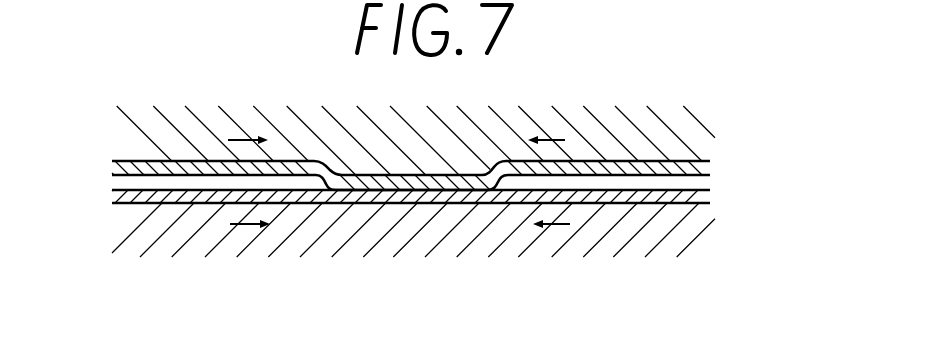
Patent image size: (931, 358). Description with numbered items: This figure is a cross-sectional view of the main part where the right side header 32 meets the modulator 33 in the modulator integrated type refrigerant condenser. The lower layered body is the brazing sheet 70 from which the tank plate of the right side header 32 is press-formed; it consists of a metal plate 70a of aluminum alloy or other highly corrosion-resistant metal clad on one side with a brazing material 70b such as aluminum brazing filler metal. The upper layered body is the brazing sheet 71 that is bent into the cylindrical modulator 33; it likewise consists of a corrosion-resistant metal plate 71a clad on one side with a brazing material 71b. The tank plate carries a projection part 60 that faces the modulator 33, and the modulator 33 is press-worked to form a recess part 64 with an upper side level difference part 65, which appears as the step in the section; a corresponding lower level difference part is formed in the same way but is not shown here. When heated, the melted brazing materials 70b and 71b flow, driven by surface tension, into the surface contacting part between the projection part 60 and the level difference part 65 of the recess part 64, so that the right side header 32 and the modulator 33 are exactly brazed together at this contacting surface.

The right side header 32 is at (105, 241).
The modulator 33 is at (106, 138).
The projection part 60 is at (202, 190).
The recess part 64 is at (163, 177).
The upper side level difference part 65 is at (422, 162).
The brazing sheet 70 is at (776, 177).
The metal plate 70a is at (672, 234).
The brazing material 70b is at (692, 195).
The brazing sheet 71 is at (774, 80).
The metal plate 71a is at (685, 130).
The brazing material 71b is at (696, 171).